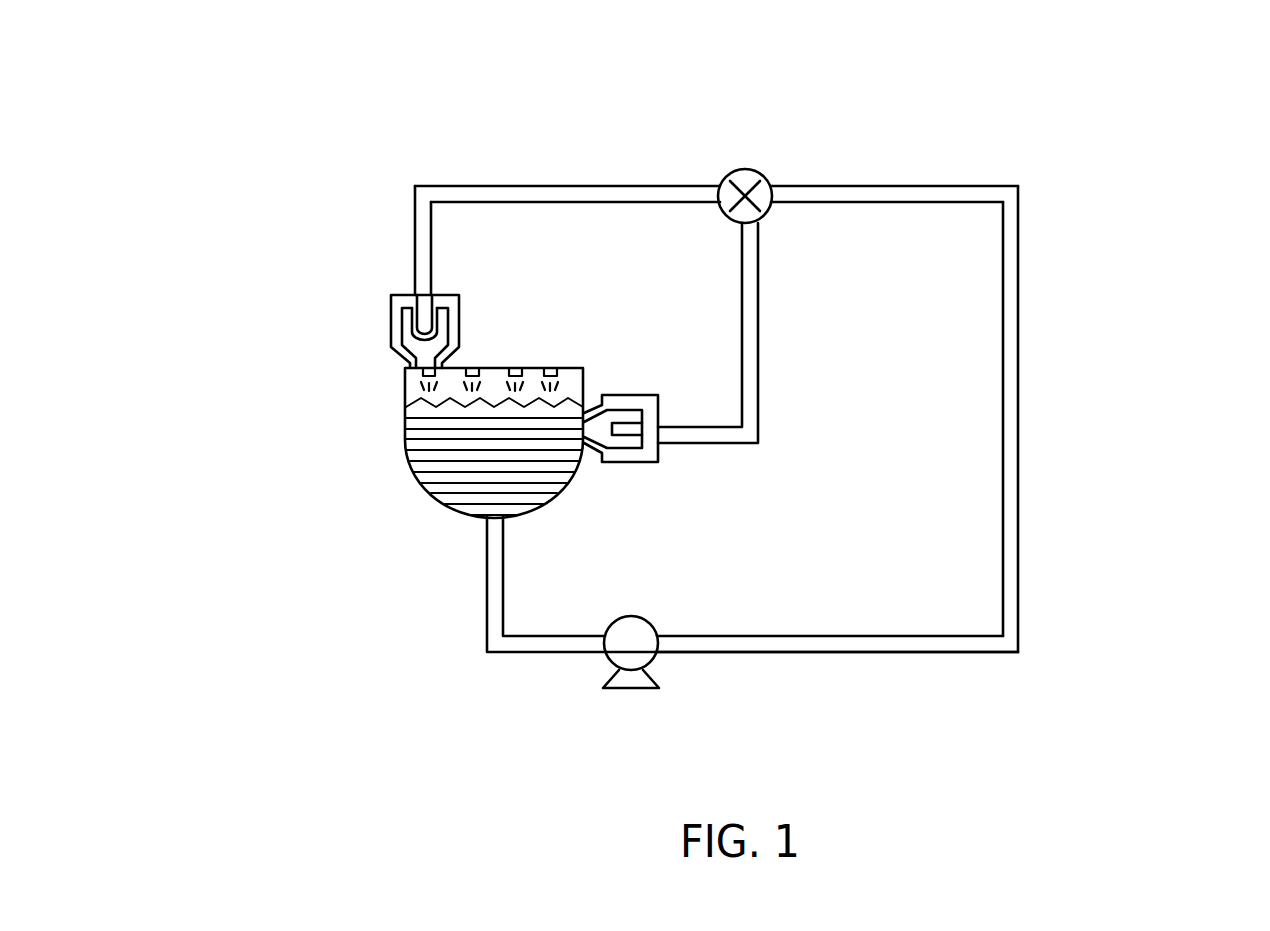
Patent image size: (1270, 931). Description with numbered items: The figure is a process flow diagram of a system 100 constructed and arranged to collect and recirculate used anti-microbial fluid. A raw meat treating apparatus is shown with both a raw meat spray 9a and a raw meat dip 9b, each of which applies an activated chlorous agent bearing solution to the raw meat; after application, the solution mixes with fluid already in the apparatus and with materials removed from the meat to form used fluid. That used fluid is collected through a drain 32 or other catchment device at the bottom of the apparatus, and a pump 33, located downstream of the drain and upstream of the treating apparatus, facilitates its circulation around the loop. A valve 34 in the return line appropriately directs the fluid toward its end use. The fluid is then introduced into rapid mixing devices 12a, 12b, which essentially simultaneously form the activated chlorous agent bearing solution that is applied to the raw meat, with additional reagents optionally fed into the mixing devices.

The system 100 is at (1053, 143).
The raw meat spray 9a is at (423, 372).
The raw meat dip 9b is at (450, 465).
The rapid mixing device 12a is at (462, 335).
The rapid mixing device 12b is at (628, 462).
The drain 32 is at (493, 588).
The pump 33 is at (619, 643).
The valve 34 is at (755, 177).